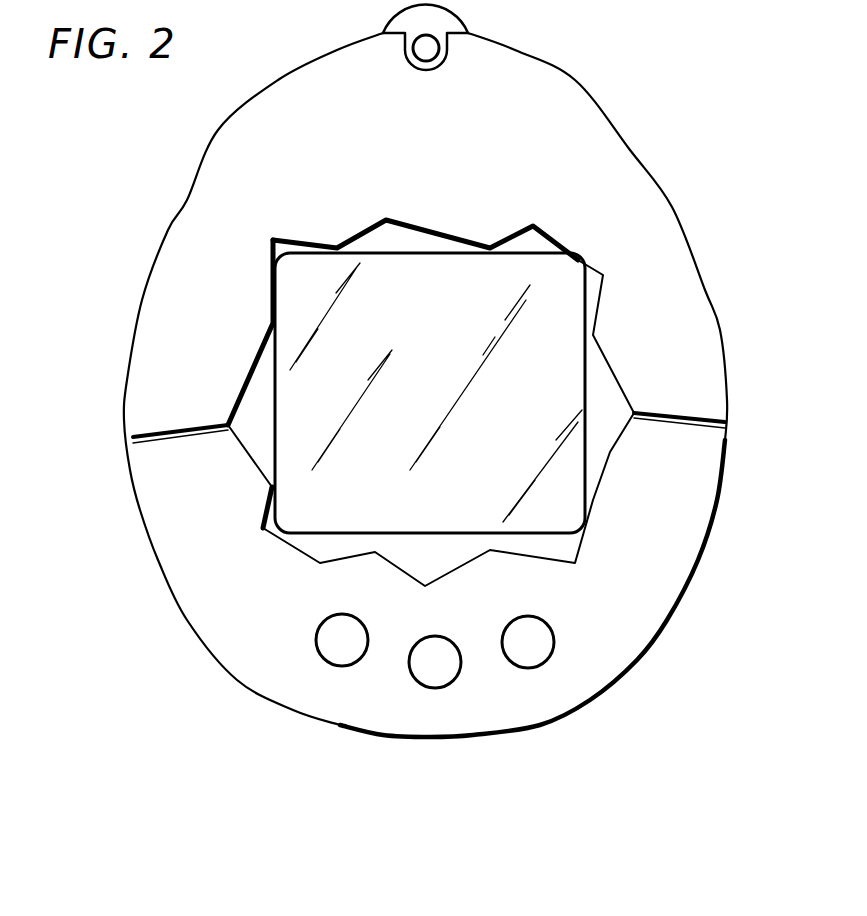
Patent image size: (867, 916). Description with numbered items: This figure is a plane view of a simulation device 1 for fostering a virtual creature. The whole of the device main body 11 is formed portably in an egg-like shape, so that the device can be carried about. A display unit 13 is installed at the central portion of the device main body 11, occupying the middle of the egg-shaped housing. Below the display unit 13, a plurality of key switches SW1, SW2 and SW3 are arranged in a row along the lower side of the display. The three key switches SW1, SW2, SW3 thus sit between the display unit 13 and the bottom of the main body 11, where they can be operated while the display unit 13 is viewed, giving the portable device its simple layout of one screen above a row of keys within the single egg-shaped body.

The electronic pet device 1 is at (457, 404).
The device main body 11 is at (672, 207).
The display unit 13 is at (558, 379).
The key switch SW1 is at (342, 667).
The key switch SW2 is at (435, 688).
The key switch SW3 is at (528, 668).